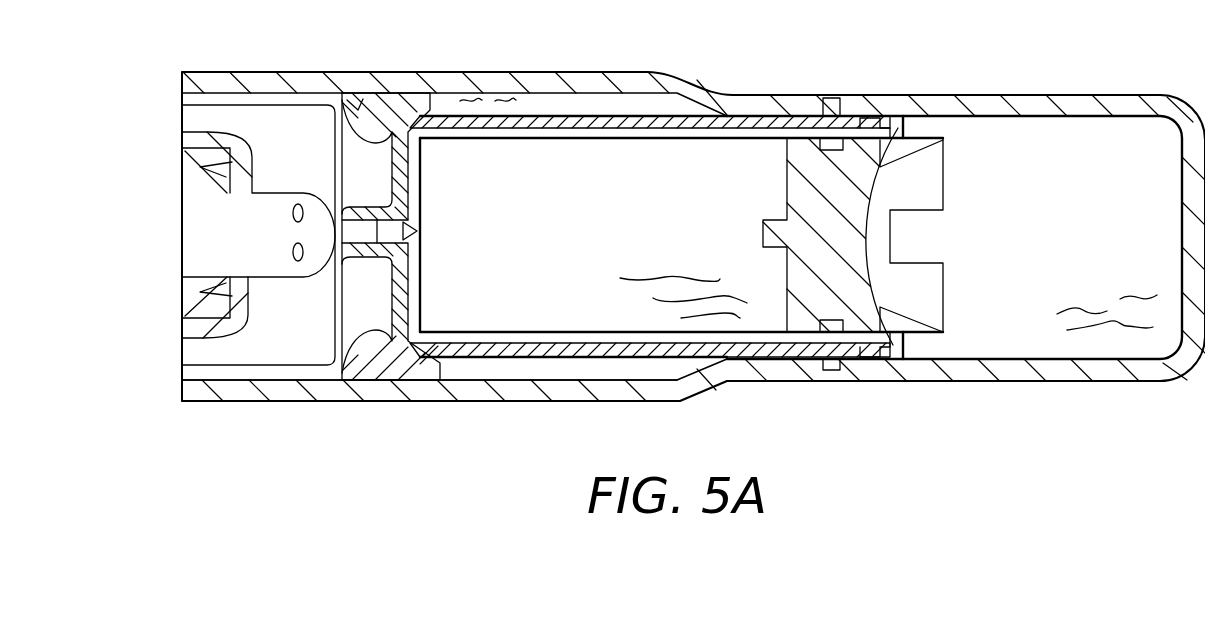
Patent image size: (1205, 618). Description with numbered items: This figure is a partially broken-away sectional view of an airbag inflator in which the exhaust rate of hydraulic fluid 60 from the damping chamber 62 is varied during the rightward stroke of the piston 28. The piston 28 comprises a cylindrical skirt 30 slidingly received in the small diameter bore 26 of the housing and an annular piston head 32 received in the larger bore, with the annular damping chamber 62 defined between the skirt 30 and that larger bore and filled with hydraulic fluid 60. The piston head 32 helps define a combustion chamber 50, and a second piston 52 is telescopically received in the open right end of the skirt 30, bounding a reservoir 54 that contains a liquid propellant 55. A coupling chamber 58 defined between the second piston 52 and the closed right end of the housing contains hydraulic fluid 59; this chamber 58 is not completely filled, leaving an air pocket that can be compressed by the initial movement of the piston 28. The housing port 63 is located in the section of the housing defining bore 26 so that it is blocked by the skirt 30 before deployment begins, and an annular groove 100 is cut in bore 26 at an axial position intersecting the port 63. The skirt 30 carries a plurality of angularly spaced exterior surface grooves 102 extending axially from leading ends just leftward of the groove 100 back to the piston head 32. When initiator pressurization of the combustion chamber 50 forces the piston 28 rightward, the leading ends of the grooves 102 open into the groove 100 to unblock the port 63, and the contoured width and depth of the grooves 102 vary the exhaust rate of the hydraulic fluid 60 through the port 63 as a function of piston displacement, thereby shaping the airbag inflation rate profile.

The small diameter bore 26 is at (950, 116).
The piston 28 is at (424, 104).
The cylindrical skirt 30 is at (560, 127).
The annular piston head 32 is at (385, 358).
The combustion chamber 50 is at (308, 150).
The second piston 52 is at (850, 227).
The reservoir 54 is at (646, 228).
The liquid propellant 55 is at (720, 317).
The coupling chamber 58 is at (1090, 227).
The hydraulic fluid 59 is at (1125, 330).
The hydraulic fluid 60 is at (475, 95).
The annular damping chamber 62 is at (537, 382).
The housing port 63 is at (833, 95).
The annular groove 100 is at (847, 113).
The exterior surface grooves 102 is at (600, 120).